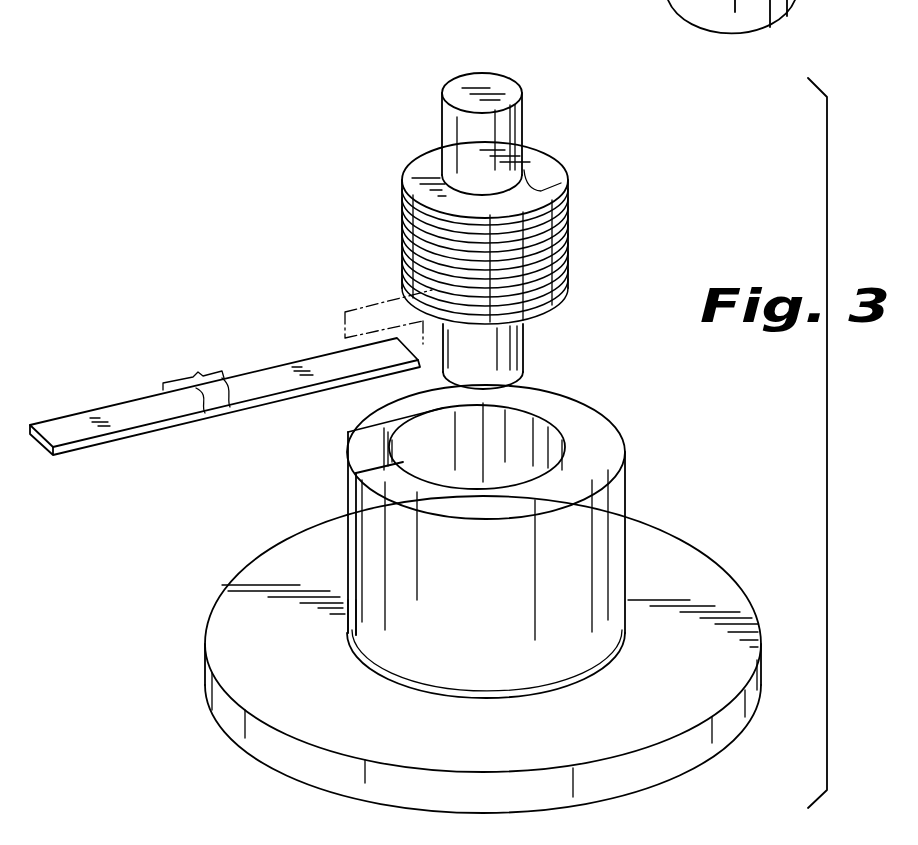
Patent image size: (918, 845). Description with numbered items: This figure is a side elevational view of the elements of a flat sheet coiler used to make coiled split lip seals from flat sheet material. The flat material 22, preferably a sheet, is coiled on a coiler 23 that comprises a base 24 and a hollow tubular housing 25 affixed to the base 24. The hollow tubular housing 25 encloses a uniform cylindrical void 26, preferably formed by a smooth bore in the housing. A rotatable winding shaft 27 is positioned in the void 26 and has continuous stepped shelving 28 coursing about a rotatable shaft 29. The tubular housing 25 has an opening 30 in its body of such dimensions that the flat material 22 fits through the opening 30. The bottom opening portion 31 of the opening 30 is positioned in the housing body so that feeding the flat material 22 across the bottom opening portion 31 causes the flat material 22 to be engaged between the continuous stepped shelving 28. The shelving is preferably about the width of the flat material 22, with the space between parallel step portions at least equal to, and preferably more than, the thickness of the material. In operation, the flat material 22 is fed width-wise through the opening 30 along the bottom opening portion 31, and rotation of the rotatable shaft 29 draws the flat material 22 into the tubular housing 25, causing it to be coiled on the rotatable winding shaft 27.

The flat material 22 is at (115, 410).
The coiler 23 is at (526, 215).
The base 24 is at (695, 565).
The hollow tubular housing 25 is at (634, 461).
The uniform cylindrical void 26 is at (517, 443).
The rotatable winding shaft 27 is at (483, 203).
The continuous stepped shelving 28 is at (576, 224).
The rotatable shaft 29 is at (507, 90).
The opening 30 is at (348, 540).
The bottom opening portion 31 is at (346, 610).